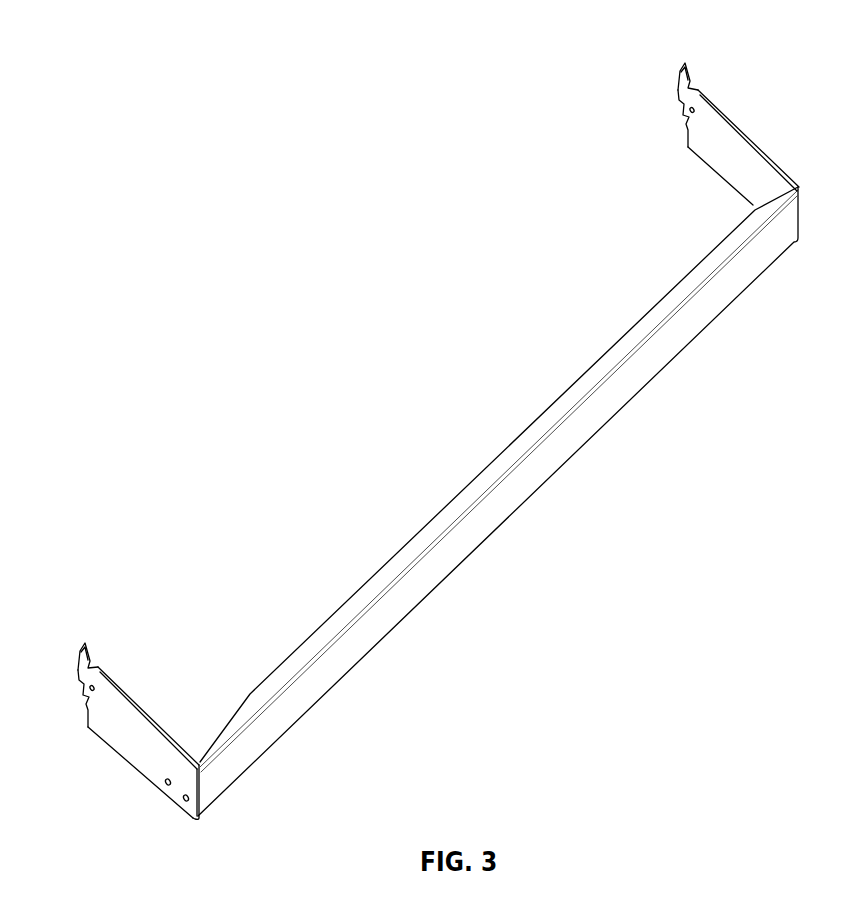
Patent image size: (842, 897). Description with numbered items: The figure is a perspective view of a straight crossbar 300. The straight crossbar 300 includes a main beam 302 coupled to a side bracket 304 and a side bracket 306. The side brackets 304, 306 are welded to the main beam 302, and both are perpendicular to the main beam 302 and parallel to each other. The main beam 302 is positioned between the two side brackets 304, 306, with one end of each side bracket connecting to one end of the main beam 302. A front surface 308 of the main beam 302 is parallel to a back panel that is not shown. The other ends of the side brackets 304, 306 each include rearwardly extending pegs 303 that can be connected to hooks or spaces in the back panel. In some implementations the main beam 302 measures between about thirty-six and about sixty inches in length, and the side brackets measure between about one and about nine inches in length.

The straight crossbar 300 is at (82, 108).
The main beam 302 is at (463, 485).
The rearwardly extending pegs 303 is at (80, 661).
The side bracket 304 is at (121, 689).
The side bracket 306 is at (722, 108).
The front surface 308 is at (502, 504).